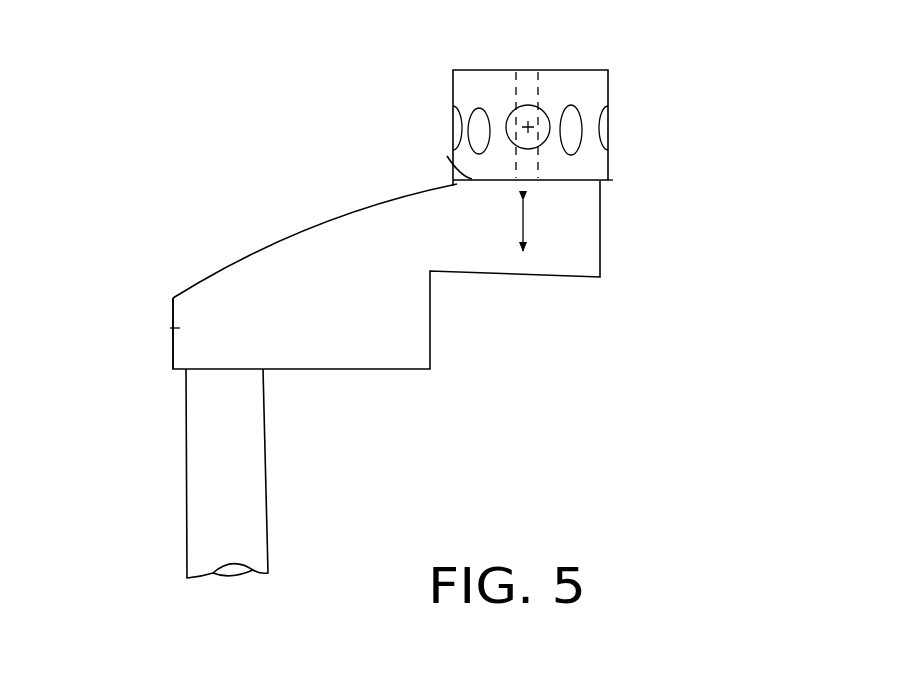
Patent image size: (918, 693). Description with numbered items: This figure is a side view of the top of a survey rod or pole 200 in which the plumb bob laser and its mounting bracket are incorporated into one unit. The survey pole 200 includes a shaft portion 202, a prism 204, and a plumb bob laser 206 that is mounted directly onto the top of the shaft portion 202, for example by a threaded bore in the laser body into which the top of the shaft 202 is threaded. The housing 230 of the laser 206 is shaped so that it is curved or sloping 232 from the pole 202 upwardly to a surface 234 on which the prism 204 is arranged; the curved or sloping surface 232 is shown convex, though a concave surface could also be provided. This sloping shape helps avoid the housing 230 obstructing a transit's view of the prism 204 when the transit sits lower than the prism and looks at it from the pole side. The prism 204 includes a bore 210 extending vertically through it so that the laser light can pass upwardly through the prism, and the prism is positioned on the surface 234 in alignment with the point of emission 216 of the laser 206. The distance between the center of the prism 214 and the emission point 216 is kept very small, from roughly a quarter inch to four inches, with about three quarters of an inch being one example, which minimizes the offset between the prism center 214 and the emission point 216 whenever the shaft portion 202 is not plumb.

The survey rod or pole 200 is at (669, 209).
The shaft portion 202 is at (178, 453).
The prism 204 is at (610, 87).
The plumb bob laser 206 is at (572, 279).
The bore 210 is at (539, 92).
The center of the prism 214 is at (532, 128).
The point of emission 216 is at (527, 233).
The housing 230 is at (177, 328).
The curved or sloping surface 232 is at (273, 244).
The surface 234 is at (447, 156).